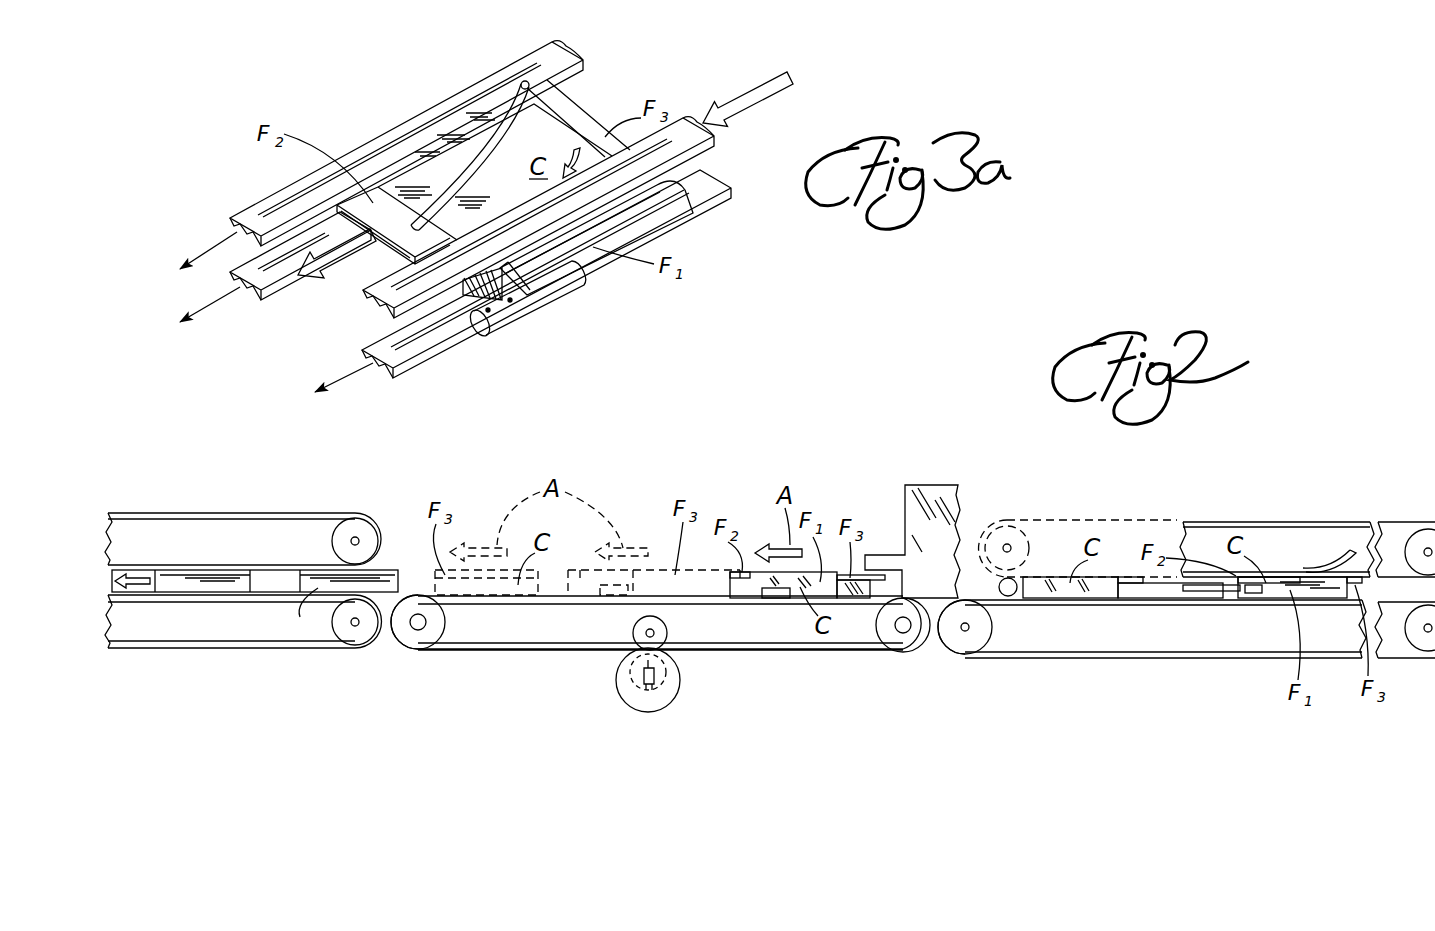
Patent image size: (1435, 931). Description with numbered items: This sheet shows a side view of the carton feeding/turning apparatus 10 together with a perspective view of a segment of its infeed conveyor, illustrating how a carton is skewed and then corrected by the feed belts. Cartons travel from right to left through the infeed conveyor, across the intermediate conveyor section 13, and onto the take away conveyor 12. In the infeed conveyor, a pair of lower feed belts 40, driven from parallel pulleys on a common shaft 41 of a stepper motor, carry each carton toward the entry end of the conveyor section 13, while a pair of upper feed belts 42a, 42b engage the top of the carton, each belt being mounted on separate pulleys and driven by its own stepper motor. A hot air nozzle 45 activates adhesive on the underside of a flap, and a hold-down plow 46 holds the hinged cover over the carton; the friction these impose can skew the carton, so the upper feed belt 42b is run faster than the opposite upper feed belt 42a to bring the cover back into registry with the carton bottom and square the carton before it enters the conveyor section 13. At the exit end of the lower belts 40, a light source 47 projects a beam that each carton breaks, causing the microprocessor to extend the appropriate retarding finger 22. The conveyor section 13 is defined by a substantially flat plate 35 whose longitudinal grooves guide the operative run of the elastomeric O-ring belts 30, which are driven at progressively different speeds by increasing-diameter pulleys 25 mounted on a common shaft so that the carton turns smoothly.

In FIG. 2, the carton feeding/turning apparatus 10 is at (1186, 678).
In FIG. 2, the take away conveyor 12 is at (285, 670).
In FIG. 2, the conveyor section 13 is at (640, 684).
In FIG. 2, the retarding finger 22 is at (766, 598).
In FIG. 2, the pulleys 25 is at (695, 704).
In FIG. 2, the O-ring belts 30 is at (660, 655).
In FIG. 2, the flat plate 35 is at (470, 600).
In FIG. 3A, the lower feed belts 40 is at (270, 279).
In FIG. 2, the lower feed belts 40 is at (1112, 653).
In FIG. 2, the common shaft 41 is at (967, 631).
In FIG. 3A, the upper feed belt 42a is at (404, 130).
In FIG. 3A, the upper feed belt 42b is at (703, 150).
In FIG. 2, the upper feed belt 42b is at (1303, 522).
In FIG. 3A, the hot air nozzle 45 is at (500, 310).
In FIG. 2, the hot air nozzle 45 is at (1213, 592).
In FIG. 3A, the hold-down plow 46 is at (540, 99).
In FIG. 2, the hold-down plow 46 is at (1336, 562).
In FIG. 2, the light source 47 is at (1008, 598).